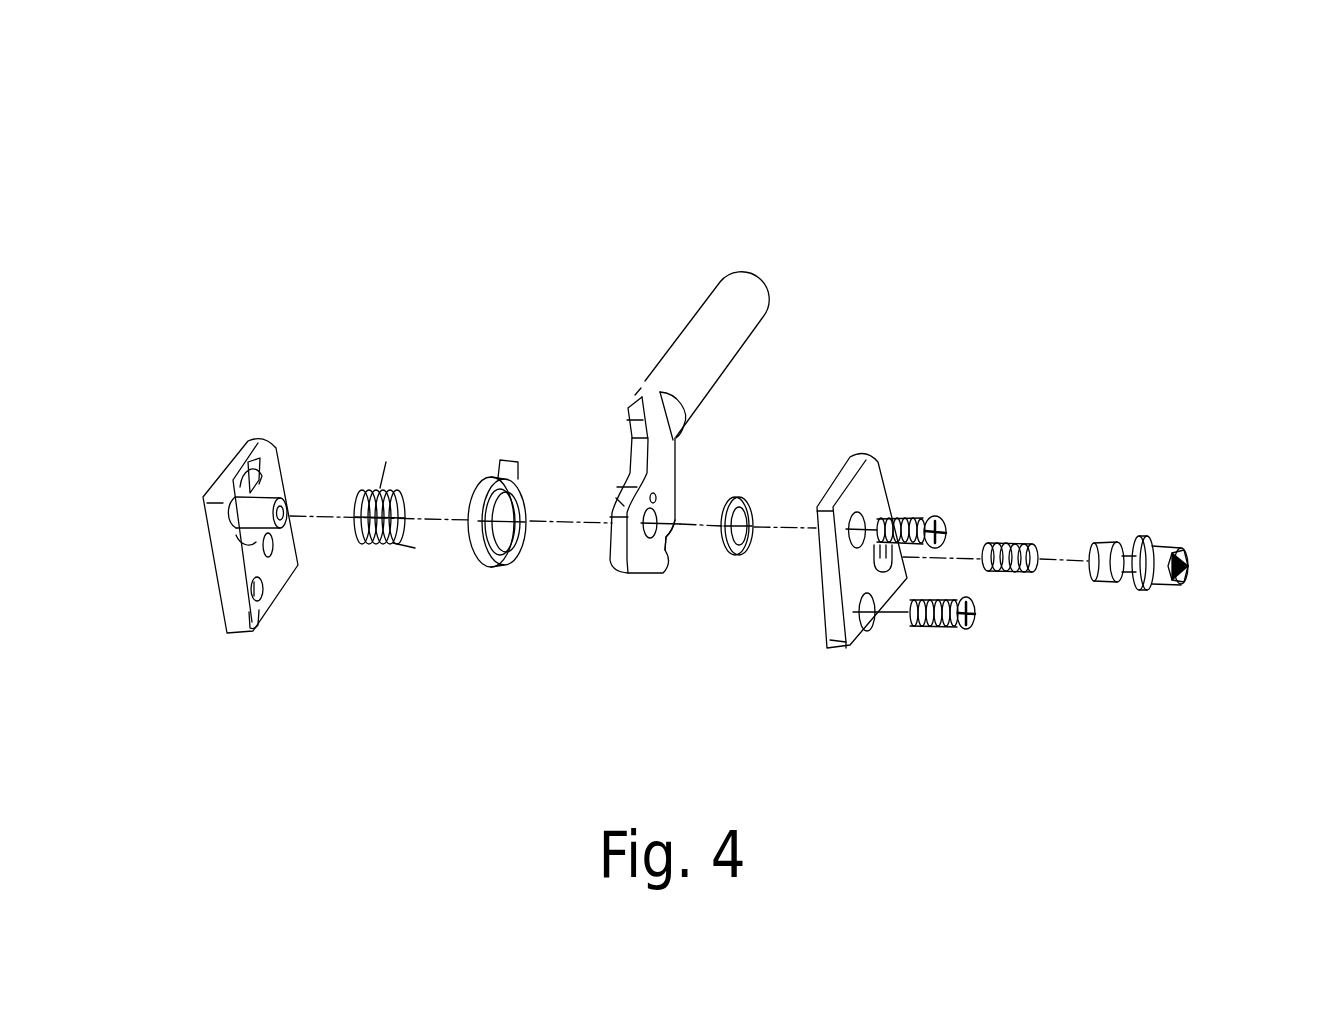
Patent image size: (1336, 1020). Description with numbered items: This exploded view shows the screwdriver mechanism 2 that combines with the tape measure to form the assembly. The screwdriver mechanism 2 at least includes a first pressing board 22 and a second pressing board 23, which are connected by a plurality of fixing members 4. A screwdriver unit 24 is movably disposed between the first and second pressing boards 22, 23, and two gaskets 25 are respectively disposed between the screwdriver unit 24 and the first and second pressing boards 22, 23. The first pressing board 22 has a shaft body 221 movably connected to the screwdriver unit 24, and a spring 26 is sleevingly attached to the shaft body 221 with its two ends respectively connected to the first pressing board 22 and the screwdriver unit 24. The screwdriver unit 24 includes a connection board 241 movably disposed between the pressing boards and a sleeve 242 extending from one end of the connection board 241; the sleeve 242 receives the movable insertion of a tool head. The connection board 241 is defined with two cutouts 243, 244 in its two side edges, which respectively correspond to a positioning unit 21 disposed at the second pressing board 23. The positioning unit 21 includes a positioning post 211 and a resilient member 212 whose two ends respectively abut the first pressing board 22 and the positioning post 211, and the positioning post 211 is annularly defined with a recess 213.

The screwdriver mechanism 2 is at (1211, 86).
The positioning unit 21 is at (1213, 450).
The positioning post 211 is at (1162, 553).
The resilient member 212 is at (1005, 547).
The recess 213 is at (1125, 550).
The first pressing board 22 is at (223, 582).
The shaft body 221 is at (248, 507).
The second pressing board 23 is at (857, 630).
The screwdriver unit 24 is at (640, 317).
The connection board 241 is at (635, 565).
The sleeve 242 is at (737, 307).
The cutout 243 is at (671, 537).
The cutout 244 is at (617, 478).
The gasket 25 is at (493, 560).
The spring 26 is at (367, 545).
The fixing member 4 is at (972, 628).